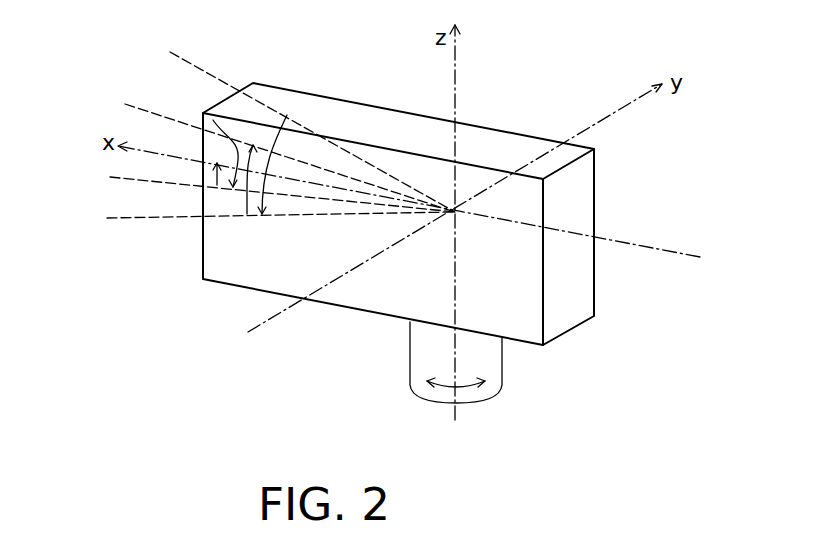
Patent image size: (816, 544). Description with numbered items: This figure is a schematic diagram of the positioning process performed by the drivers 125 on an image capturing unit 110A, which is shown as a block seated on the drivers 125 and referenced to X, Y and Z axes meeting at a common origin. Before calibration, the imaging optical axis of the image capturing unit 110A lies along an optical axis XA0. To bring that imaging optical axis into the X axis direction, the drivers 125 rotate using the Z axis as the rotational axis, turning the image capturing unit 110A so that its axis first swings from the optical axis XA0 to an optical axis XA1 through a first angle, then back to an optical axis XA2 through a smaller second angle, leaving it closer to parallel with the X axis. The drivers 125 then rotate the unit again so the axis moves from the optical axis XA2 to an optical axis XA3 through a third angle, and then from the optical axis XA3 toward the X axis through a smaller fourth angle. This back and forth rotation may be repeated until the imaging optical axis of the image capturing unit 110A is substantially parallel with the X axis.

The image capturing unit 110A is at (580, 300).
The drivers 125 is at (495, 375).
The optical axis XA0 is at (178, 52).
The optical axis XA1 is at (131, 219).
The optical axis XA2 is at (127, 105).
The optical axis XA3 is at (127, 180).